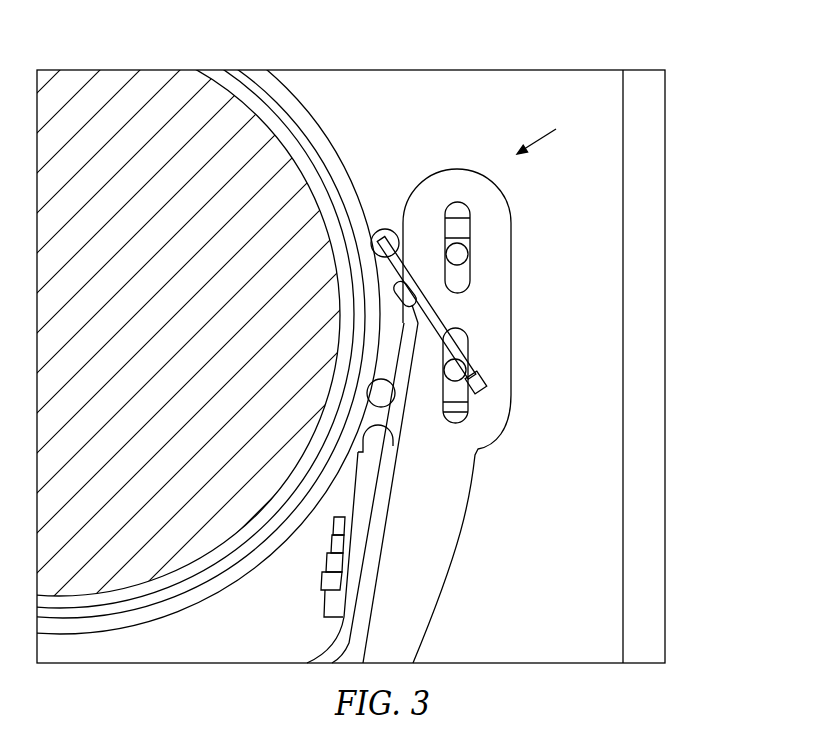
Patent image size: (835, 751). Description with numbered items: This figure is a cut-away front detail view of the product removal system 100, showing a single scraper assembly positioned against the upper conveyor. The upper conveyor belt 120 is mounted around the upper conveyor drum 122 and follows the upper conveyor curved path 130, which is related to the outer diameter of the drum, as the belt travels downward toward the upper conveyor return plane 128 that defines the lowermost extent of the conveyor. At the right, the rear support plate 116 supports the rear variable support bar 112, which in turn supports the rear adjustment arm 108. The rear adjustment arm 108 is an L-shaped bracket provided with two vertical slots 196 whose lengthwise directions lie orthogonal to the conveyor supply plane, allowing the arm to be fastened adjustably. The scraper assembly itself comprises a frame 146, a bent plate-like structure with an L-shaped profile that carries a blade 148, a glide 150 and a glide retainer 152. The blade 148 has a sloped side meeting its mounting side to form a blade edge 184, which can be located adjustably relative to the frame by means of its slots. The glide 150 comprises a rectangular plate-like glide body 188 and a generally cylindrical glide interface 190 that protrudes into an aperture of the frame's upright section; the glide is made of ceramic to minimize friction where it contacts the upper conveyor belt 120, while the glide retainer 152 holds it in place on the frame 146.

The product removal system 100 is at (549, 137).
The rear adjustment arm 108 is at (413, 605).
The rear variable support bar 112 is at (457, 278).
The rear support plate 116 is at (625, 242).
The upper conveyor belt 120 is at (163, 608).
The upper conveyor drum 122 is at (283, 124).
The upper conveyor return plane 128 is at (52, 637).
The upper conveyor curved path 130 is at (326, 152).
The frame 146 is at (390, 472).
The blade 148 is at (433, 322).
The glide 150 is at (370, 537).
The glide retainer 152 is at (330, 553).
The blade edge 184 is at (384, 228).
The glide body 188 is at (363, 496).
The glide interface 190 is at (390, 424).
The vertical slots 196 is at (470, 225).